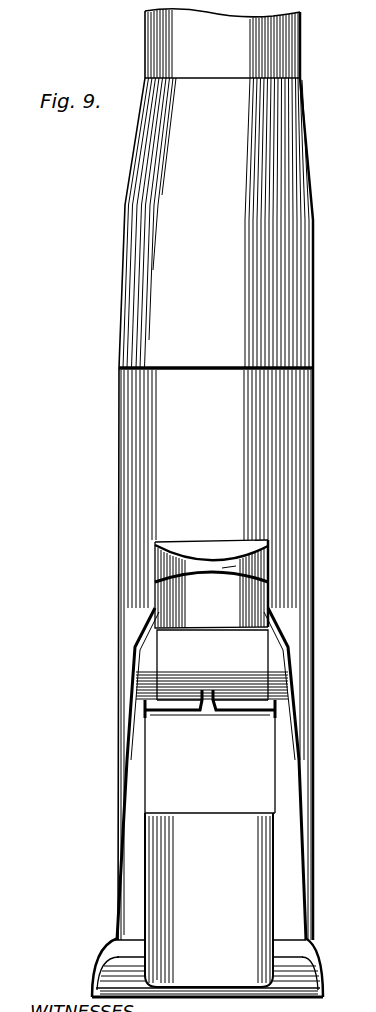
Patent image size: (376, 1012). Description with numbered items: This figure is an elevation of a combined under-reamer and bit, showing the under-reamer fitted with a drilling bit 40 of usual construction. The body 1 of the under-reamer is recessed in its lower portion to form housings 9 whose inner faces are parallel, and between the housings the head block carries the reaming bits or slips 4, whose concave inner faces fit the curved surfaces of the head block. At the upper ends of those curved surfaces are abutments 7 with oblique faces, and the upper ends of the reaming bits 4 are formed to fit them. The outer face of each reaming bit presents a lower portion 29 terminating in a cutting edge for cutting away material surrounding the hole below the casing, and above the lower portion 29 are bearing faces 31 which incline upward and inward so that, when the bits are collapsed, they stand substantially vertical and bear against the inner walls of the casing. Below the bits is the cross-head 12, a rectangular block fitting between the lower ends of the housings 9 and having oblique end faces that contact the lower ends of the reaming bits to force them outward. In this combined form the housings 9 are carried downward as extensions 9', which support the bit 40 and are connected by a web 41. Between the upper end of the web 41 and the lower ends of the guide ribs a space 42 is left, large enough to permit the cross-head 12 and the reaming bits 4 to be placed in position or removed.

The body of the under-reamer 1 is at (320, 163).
The bearing faces 31 is at (327, 525).
The abutments 7 is at (207, 542).
The reaming bits or slips 4 is at (180, 594).
The lower portion of the outer face of the reaming bit 29 is at (211, 595).
The cross-head 12 is at (212, 665).
The housings 9 is at (230, 774).
The downward extension of the housings 9' is at (303, 774).
The space 42 is at (182, 767).
The web 41 is at (209, 900).
The bit 40 is at (290, 923).